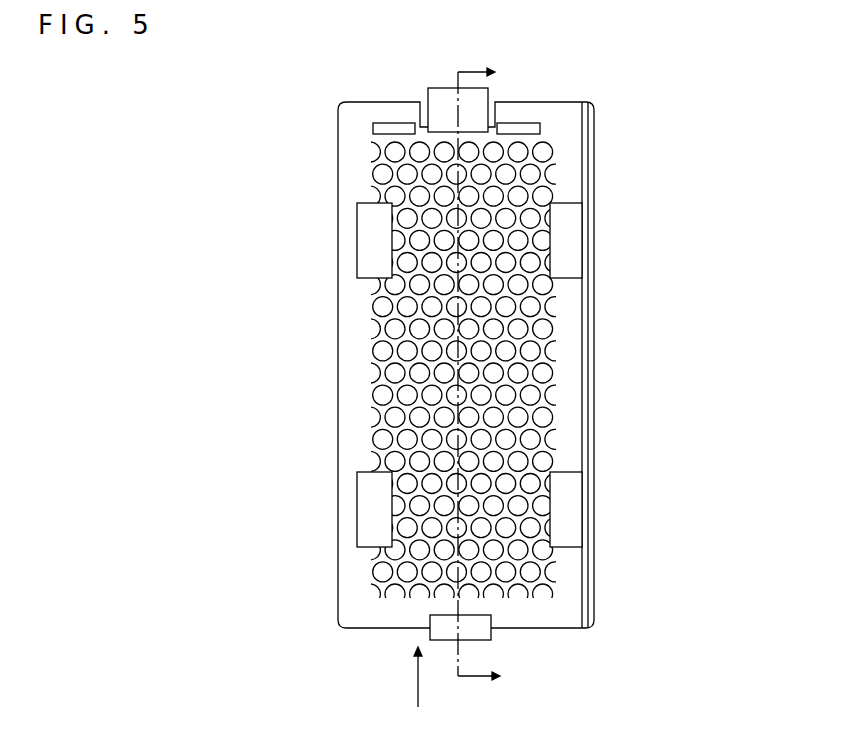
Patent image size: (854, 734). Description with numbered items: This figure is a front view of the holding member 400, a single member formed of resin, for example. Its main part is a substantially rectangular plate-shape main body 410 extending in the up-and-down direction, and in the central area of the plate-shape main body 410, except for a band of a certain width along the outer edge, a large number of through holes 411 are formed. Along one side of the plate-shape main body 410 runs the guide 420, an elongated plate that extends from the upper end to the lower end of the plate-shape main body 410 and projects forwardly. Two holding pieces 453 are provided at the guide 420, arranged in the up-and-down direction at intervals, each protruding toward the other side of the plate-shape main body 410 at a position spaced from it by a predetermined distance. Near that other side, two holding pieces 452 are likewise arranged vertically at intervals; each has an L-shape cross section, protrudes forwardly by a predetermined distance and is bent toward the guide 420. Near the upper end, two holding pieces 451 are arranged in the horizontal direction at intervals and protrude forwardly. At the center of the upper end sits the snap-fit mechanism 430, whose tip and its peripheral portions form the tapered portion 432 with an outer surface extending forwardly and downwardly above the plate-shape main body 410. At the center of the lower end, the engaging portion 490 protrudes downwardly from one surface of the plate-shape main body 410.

The holding member 400 is at (482, 377).
The plate-shape main body 410 is at (431, 365).
The through holes 411 is at (543, 285).
The guide 420 is at (588, 572).
The snap-fit mechanism 430 is at (461, 92).
The tapered portion 432 is at (447, 106).
The holding pieces 451 is at (390, 131).
The holding pieces 452 is at (372, 229).
The holding pieces 453 is at (570, 228).
The engaging portion 490 is at (487, 633).